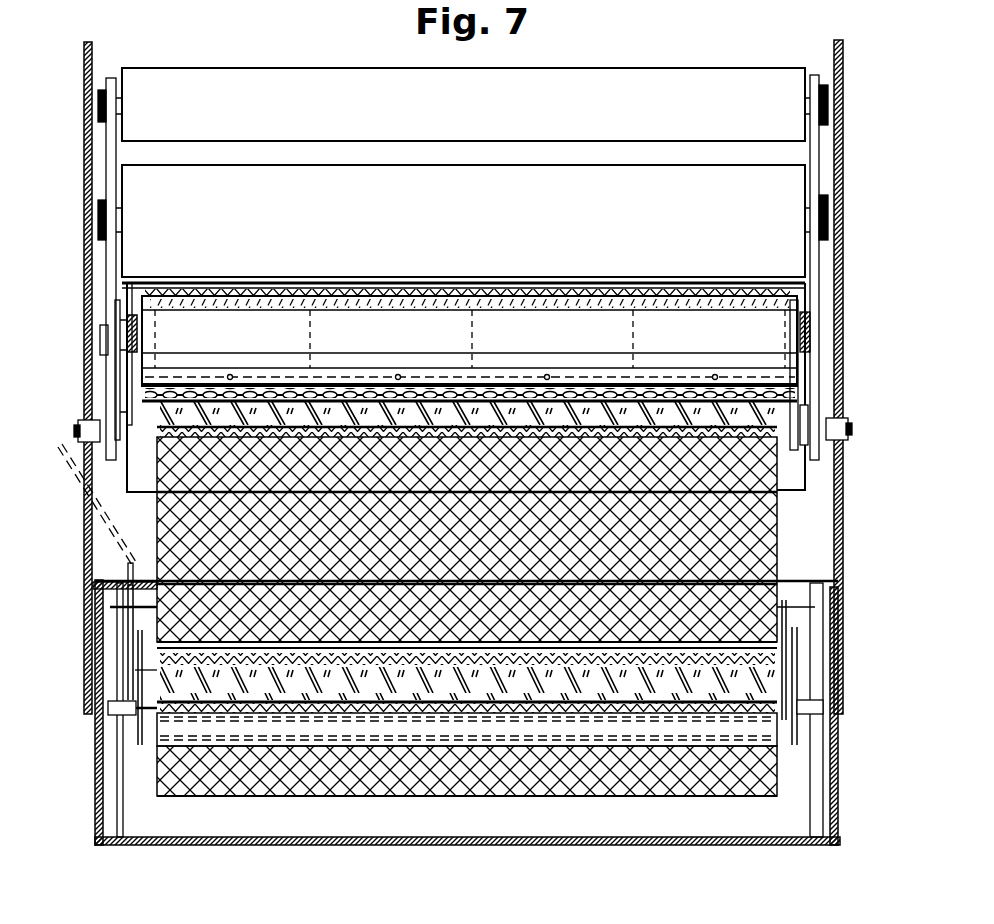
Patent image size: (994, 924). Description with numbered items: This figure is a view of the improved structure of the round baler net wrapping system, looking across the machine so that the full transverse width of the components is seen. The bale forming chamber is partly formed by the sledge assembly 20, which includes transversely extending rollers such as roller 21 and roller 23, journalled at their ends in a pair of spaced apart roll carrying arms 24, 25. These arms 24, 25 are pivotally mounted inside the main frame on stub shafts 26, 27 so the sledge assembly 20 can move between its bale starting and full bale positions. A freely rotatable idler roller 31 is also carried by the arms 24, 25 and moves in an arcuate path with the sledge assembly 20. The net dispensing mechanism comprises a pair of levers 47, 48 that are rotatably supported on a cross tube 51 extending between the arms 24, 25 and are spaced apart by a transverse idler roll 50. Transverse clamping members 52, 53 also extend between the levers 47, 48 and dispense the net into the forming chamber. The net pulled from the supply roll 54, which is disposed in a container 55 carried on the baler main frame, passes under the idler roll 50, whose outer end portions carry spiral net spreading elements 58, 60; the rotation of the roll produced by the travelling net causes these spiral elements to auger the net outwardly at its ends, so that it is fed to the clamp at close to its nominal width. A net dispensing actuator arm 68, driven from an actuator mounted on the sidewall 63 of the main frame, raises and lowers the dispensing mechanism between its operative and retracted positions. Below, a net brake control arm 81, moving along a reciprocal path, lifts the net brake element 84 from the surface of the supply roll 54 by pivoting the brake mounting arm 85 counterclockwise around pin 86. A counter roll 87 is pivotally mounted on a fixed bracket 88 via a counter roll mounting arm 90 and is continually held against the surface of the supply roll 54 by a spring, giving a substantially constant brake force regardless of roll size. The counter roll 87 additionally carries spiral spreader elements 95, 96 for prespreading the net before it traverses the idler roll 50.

The sidewall 63 is at (86, 75).
The sledge assembly 20 is at (100, 266).
The roll carrying arm 24 is at (108, 170).
The roll carrying arm 25 is at (815, 153).
The idler roller 31 is at (676, 108).
The roller 21 is at (358, 212).
The idler roll 50 is at (463, 260).
The roller 23 is at (786, 498).
The clamping member 52 is at (352, 340).
The clamping member 53 is at (428, 373).
The net spreading element 58 is at (407, 413).
The net spreading element 60 is at (640, 412).
The lever 47 is at (143, 432).
The cross tube 51 is at (130, 300).
The net dispensing actuator arm 68 is at (128, 372).
The stub shaft 26 is at (80, 432).
The stub shaft 27 is at (850, 428).
The lever 48 is at (790, 437).
The net brake control arm 81 is at (80, 520).
The spiral spreader element 96 is at (548, 738).
The counter roll 87 is at (455, 688).
The spiral spreader element 95 is at (348, 715).
The container 55 is at (97, 813).
The fixed bracket 88 is at (118, 770).
The net brake element 84 is at (745, 725).
The counter roll mounting arm 90 is at (134, 618).
The pin 86 is at (140, 665).
The brake mounting arm 85 is at (128, 692).
The supply roll 54 is at (610, 796).